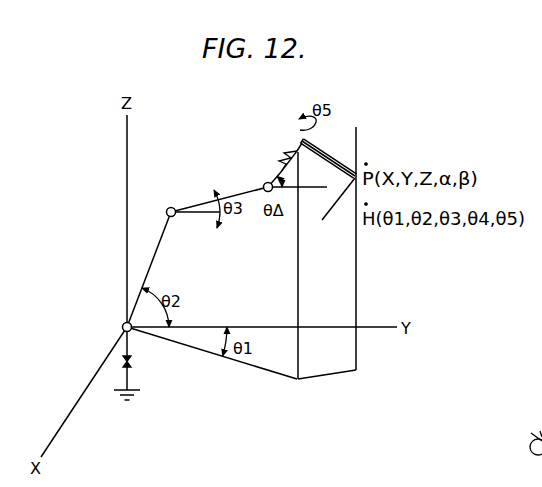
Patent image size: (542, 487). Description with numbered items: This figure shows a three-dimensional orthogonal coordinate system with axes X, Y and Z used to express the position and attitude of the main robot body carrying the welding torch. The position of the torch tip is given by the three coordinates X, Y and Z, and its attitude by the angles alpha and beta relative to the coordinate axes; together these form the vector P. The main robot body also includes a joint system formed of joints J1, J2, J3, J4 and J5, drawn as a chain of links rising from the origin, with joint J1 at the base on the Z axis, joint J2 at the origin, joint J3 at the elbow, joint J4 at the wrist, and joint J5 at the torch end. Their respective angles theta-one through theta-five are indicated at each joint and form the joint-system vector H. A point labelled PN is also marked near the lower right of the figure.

The joint J1 is at (133, 362).
The joint J2 is at (123, 328).
The joint J3 is at (168, 208).
The joint J4 is at (265, 184).
The joint J5 is at (288, 158).
The position PN is at (533, 454).